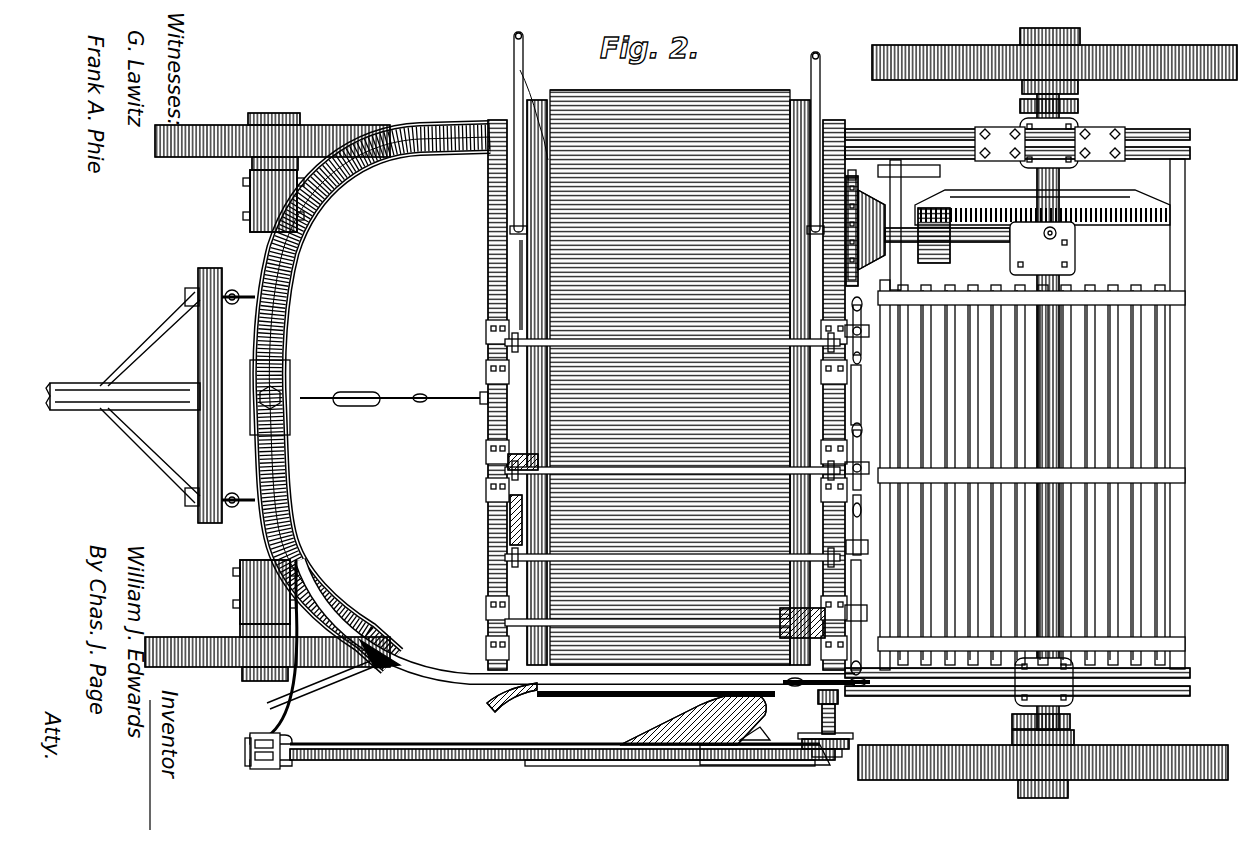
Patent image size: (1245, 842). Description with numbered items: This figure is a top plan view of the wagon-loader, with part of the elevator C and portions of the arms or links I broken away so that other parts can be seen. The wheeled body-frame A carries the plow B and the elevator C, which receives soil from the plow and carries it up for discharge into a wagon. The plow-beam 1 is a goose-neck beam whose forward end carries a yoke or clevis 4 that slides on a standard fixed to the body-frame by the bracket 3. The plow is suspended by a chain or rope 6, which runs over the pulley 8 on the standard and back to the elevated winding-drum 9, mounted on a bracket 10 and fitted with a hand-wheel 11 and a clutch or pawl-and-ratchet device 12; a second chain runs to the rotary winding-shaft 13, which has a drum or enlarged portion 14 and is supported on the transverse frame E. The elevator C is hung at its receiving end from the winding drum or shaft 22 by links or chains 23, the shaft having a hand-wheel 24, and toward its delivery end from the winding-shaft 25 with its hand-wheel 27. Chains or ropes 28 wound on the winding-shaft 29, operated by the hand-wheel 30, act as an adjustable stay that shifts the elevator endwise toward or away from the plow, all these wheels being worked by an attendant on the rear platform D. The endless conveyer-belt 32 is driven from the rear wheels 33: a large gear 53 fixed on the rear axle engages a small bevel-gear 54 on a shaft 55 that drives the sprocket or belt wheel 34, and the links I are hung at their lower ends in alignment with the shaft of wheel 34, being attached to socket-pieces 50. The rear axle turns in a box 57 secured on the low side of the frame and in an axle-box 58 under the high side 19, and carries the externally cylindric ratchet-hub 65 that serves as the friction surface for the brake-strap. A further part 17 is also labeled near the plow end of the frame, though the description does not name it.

The plow-beam 1 is at (483, 758).
The bracket 3 is at (320, 681).
The yoke or clevis 4 is at (292, 745).
The raising and lowering chain or rope 6 is at (410, 760).
The pulley 8 is at (275, 768).
The winding-drum 9 is at (842, 746).
The bracket 10 is at (843, 719).
The hand-wheel 11 is at (856, 690).
The clutch or pawl-and-ratchet device 12 is at (815, 703).
The rotary winding-shaft 13 is at (636, 624).
The drum or enlarged portion 14 is at (859, 617).
The plate 17 is at (790, 762).
The high side of the body-frame 19 is at (480, 684).
The rotary winding drum or shaft 22 is at (751, 560).
The links or chains or ropes 23 is at (514, 523).
The hand-wheel 24 is at (864, 526).
The rotary drum or winding-shaft 25 is at (597, 345).
The hand-wheel 27 is at (865, 330).
The chains or ropes 28 is at (508, 278).
The rotary winding-shaft 29 is at (716, 474).
The hand-wheel 30 is at (866, 456).
The endless carrier or conveyer-belt 32 is at (670, 377).
The rear wheels 33 is at (1145, 82).
The sprocket or belt wheel 34 is at (851, 178).
The socket-pieces 50 is at (871, 221).
The large gear 53 is at (1042, 217).
The small bevel-gear 54 is at (942, 237).
The shaft 55 is at (989, 238).
The box 57 is at (1078, 128).
The axle-box 58 is at (1068, 708).
The ratchet-hub 65 is at (1020, 104).
The wheeled body-frame A is at (379, 424).
The plow B is at (640, 712).
The elevator C is at (636, 114).
The rear platform D is at (1145, 446).
The support or frame E is at (837, 432).
The arms or links I is at (523, 70).